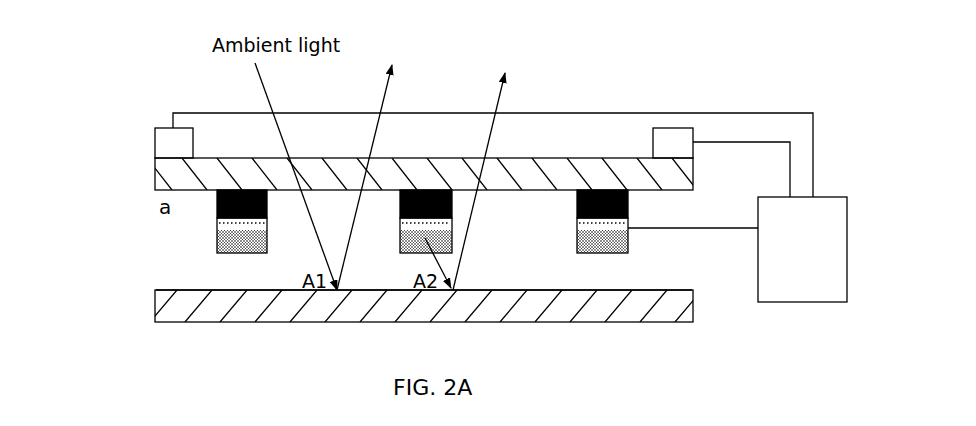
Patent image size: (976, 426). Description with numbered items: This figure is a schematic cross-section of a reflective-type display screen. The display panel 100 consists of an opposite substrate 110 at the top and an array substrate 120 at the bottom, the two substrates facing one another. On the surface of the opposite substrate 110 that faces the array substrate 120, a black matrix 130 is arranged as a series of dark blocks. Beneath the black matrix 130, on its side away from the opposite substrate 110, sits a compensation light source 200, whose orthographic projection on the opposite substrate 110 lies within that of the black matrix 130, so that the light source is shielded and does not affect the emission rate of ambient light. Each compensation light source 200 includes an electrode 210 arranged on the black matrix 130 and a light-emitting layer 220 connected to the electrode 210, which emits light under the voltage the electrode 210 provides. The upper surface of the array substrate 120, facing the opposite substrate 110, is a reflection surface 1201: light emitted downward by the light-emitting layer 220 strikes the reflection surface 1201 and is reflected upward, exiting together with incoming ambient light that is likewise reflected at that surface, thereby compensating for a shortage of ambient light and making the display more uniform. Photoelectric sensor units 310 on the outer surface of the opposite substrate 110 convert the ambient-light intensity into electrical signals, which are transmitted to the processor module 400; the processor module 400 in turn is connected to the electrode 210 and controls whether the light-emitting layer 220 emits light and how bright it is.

The display panel 100 is at (91, 168).
The opposite substrate 110 is at (172, 188).
The array substrate 120 is at (165, 306).
The reflection surface 1201 is at (183, 290).
The black matrix 130 is at (577, 212).
The compensation light source 200 is at (334, 224).
The electrode 210 is at (267, 222).
The light-emitting layer 220 is at (267, 247).
The photoelectric sensor unit 310 is at (193, 150).
The processor module 400 is at (737, 249).